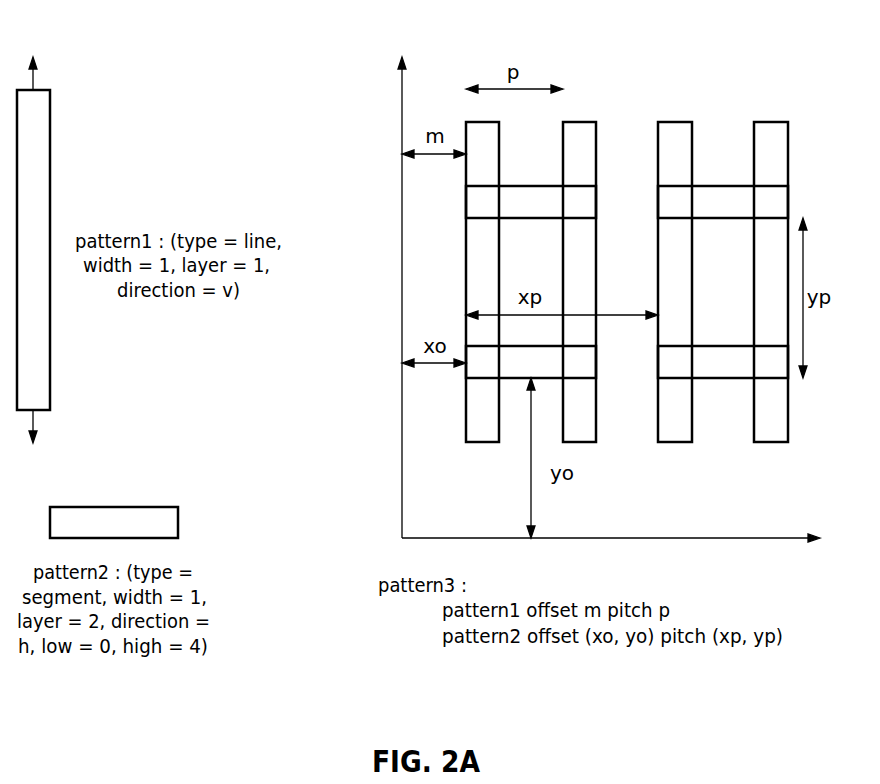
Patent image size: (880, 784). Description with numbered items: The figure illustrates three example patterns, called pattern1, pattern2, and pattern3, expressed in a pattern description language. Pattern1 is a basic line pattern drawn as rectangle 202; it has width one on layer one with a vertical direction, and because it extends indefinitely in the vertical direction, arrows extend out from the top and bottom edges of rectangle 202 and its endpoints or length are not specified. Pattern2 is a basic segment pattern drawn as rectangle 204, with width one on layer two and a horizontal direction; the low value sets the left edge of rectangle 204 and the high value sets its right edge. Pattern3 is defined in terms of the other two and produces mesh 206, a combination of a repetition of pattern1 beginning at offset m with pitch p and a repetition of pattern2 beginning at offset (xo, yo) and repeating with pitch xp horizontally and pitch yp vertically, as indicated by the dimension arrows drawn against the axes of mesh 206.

The rectangle 202 is at (48, 88).
The rectangle 204 is at (178, 507).
The mesh 206 is at (750, 71).